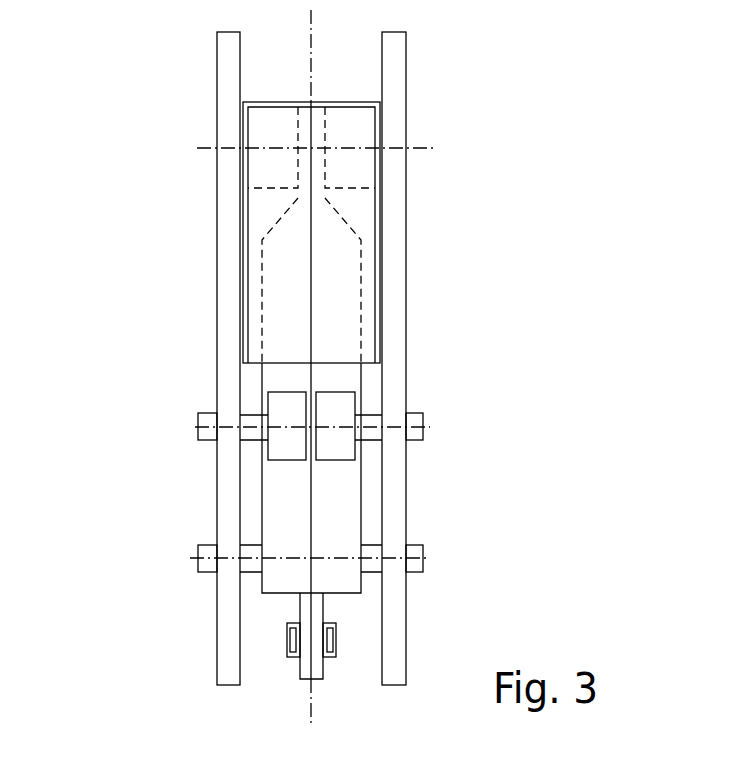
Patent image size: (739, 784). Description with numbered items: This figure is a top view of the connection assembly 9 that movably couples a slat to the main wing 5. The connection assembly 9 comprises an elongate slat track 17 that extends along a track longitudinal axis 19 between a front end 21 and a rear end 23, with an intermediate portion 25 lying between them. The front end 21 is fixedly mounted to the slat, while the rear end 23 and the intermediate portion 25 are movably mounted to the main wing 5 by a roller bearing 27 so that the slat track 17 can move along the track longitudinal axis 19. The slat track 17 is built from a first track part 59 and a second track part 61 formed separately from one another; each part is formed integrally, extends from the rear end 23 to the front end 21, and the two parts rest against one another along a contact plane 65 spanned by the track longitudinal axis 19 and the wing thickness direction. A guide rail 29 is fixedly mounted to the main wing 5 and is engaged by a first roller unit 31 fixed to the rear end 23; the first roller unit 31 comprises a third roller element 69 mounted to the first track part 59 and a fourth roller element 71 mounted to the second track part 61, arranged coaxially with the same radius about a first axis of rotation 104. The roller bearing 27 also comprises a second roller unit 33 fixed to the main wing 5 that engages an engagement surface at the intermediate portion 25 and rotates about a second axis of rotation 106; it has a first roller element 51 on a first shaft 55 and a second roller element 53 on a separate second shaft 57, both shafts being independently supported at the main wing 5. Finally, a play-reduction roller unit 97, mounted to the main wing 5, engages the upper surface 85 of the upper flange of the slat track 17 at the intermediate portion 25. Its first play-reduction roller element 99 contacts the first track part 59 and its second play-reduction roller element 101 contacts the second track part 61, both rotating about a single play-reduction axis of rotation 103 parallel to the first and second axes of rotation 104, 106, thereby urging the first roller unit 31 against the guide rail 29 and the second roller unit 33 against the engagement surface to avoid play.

The connection assembly 9 is at (441, 60).
The main wing 5 is at (397, 385).
The roller bearing 27 is at (396, 232).
The first roller unit 31 is at (396, 125).
The rear end 23 is at (305, 107).
The fourth roller element 71 is at (268, 125).
The third roller element 69 is at (347, 123).
The guide rail 29 is at (380, 210).
The first axis of rotation 104 is at (210, 150).
The play-reduction roller unit 97 is at (197, 401).
The second play-reduction roller element 101 is at (287, 405).
The first play-reduction roller element 99 is at (340, 405).
The play-reduction axis of rotation 103 is at (198, 427).
The intermediate portion 25 is at (345, 446).
The slat track 17 is at (277, 475).
The second track part 61 is at (280, 502).
The first track part 59 is at (345, 482).
The upper surface 85 is at (345, 510).
The second roller unit 33 is at (380, 567).
The second axis of rotation 106 is at (193, 553).
The second roller element 53 is at (254, 540).
The second shaft 57 is at (205, 562).
The first roller element 51 is at (372, 540).
The first shaft 55 is at (413, 557).
The front end 21 is at (347, 587).
The track longitudinal axis 19 is at (376, 369).
The contact plane 65 is at (312, 710).